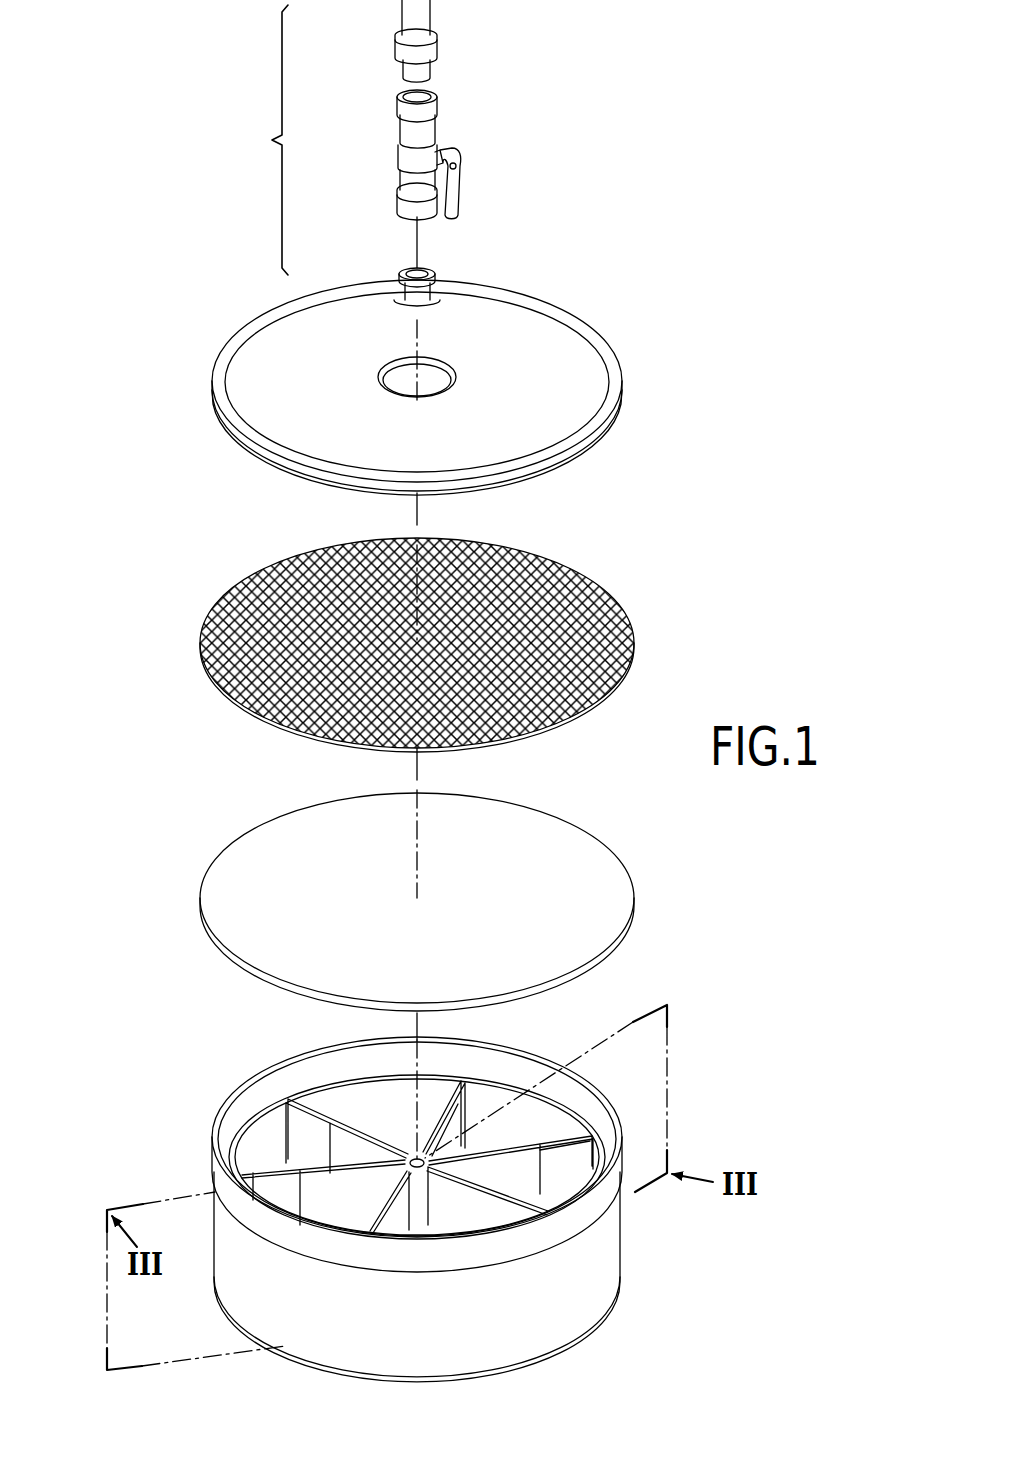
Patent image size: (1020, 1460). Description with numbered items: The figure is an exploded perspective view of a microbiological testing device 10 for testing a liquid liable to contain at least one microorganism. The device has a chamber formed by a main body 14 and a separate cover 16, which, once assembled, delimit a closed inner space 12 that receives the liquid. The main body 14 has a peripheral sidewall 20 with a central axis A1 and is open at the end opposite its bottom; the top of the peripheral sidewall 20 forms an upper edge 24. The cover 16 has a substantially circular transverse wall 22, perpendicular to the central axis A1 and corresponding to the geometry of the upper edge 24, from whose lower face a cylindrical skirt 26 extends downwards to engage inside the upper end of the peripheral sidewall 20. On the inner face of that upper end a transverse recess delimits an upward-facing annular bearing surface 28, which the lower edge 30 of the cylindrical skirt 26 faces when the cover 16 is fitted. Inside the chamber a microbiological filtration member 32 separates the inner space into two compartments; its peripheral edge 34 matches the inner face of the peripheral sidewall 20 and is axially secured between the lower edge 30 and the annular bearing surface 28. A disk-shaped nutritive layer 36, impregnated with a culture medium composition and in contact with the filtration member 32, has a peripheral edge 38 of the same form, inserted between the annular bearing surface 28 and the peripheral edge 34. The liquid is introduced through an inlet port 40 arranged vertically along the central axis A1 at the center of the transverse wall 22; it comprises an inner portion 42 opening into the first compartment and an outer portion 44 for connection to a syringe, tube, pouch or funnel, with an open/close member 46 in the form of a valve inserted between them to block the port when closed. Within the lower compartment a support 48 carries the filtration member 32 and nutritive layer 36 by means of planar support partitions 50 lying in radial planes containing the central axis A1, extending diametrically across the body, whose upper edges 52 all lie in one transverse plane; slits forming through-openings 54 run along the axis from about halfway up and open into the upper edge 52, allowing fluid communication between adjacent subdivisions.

The microbiological testing device 10 is at (108, 445).
The closed inner space 12 is at (452, 1169).
The main body 14 is at (452, 1198).
The cover 16 is at (448, 374).
The peripheral sidewall 20 is at (598, 1267).
The transverse wall 22 is at (548, 322).
The upper edge 24 is at (530, 1062).
The cylindrical skirt 26 is at (595, 440).
The annular bearing surface 28 is at (250, 1118).
The lower edge 30 is at (553, 480).
The microbiological filtration member 32 is at (452, 641).
The peripheral edge 34 is at (630, 675).
The nutritive layer 36 is at (453, 902).
The peripheral edge 38 is at (633, 918).
The inlet port 40 is at (348, 137).
The inner portion 42 is at (396, 271).
The outer portion 44 is at (383, 38).
The open/close member 46 is at (392, 138).
The support 48 is at (411, 1159).
The support partitions 50 is at (510, 1180).
The upper edge 52 is at (510, 1150).
The through-openings 54 is at (537, 1165).
The central axis A1 is at (417, 240).